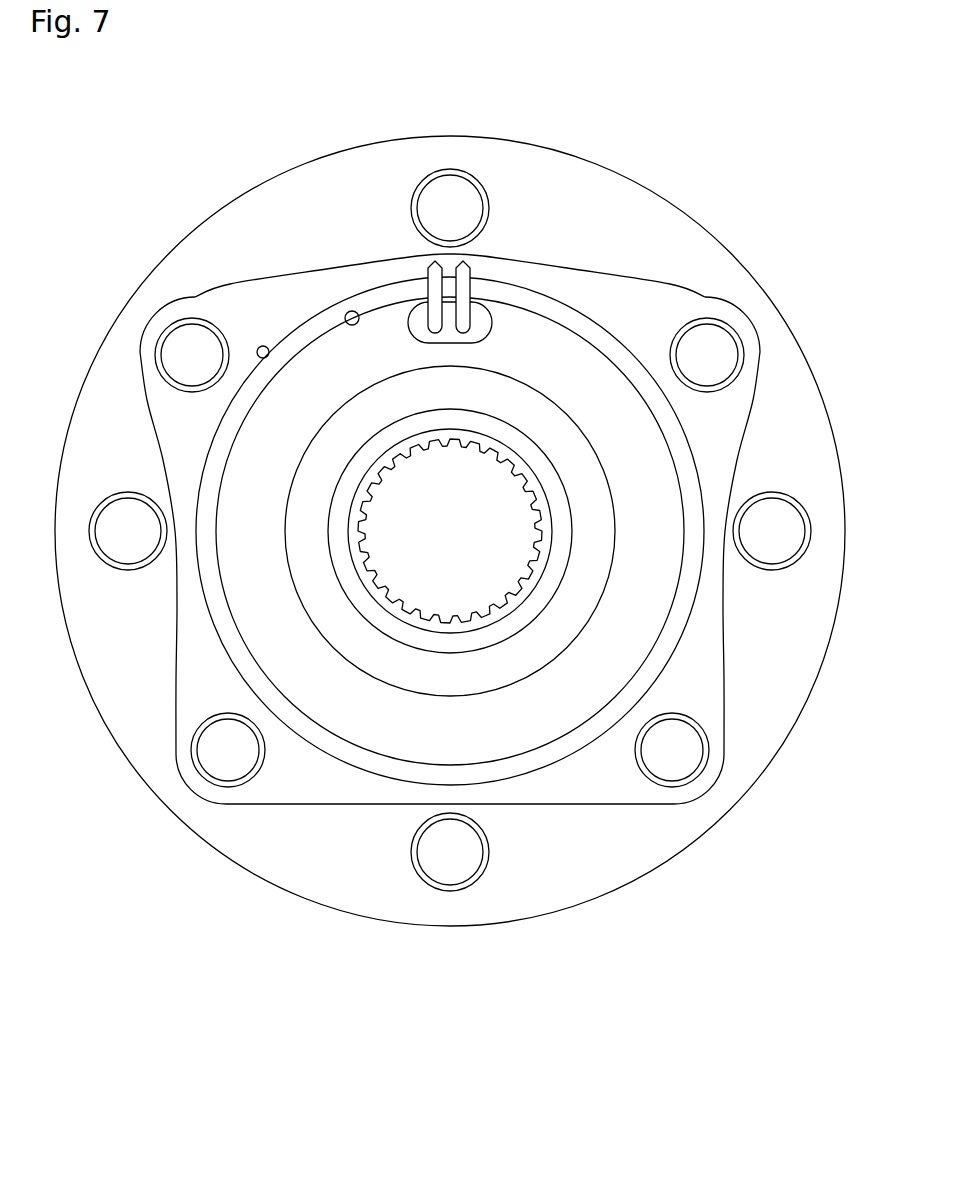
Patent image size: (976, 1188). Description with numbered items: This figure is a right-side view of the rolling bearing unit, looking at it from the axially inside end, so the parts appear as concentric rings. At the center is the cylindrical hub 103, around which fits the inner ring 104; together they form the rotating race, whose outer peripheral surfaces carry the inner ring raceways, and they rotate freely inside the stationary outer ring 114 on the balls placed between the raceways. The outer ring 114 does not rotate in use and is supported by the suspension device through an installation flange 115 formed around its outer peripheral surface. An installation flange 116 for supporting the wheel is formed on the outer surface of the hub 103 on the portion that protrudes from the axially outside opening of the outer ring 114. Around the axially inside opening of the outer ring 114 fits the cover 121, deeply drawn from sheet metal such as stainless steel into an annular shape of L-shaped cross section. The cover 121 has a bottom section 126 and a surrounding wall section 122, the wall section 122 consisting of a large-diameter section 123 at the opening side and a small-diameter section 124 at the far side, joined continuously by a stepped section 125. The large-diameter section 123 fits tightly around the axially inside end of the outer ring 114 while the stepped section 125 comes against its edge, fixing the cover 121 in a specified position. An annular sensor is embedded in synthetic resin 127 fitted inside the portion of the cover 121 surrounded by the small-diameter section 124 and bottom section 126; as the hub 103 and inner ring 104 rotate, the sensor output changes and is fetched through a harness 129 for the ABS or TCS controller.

The hub 103 is at (560, 520).
The inner ring 104 is at (585, 462).
The outer ring 114 is at (383, 272).
The installation flange 115 is at (240, 795).
The installation flange 116 is at (540, 899).
The cover 121 is at (605, 372).
The surrounding wall section 122 is at (318, 721).
The large-diameter section 123 is at (262, 358).
The small-diameter section 124 is at (351, 325).
The stepped section 125 is at (322, 323).
The bottom section 126 is at (577, 357).
The synthetic resin 127 is at (490, 318).
The harness 129 is at (463, 273).